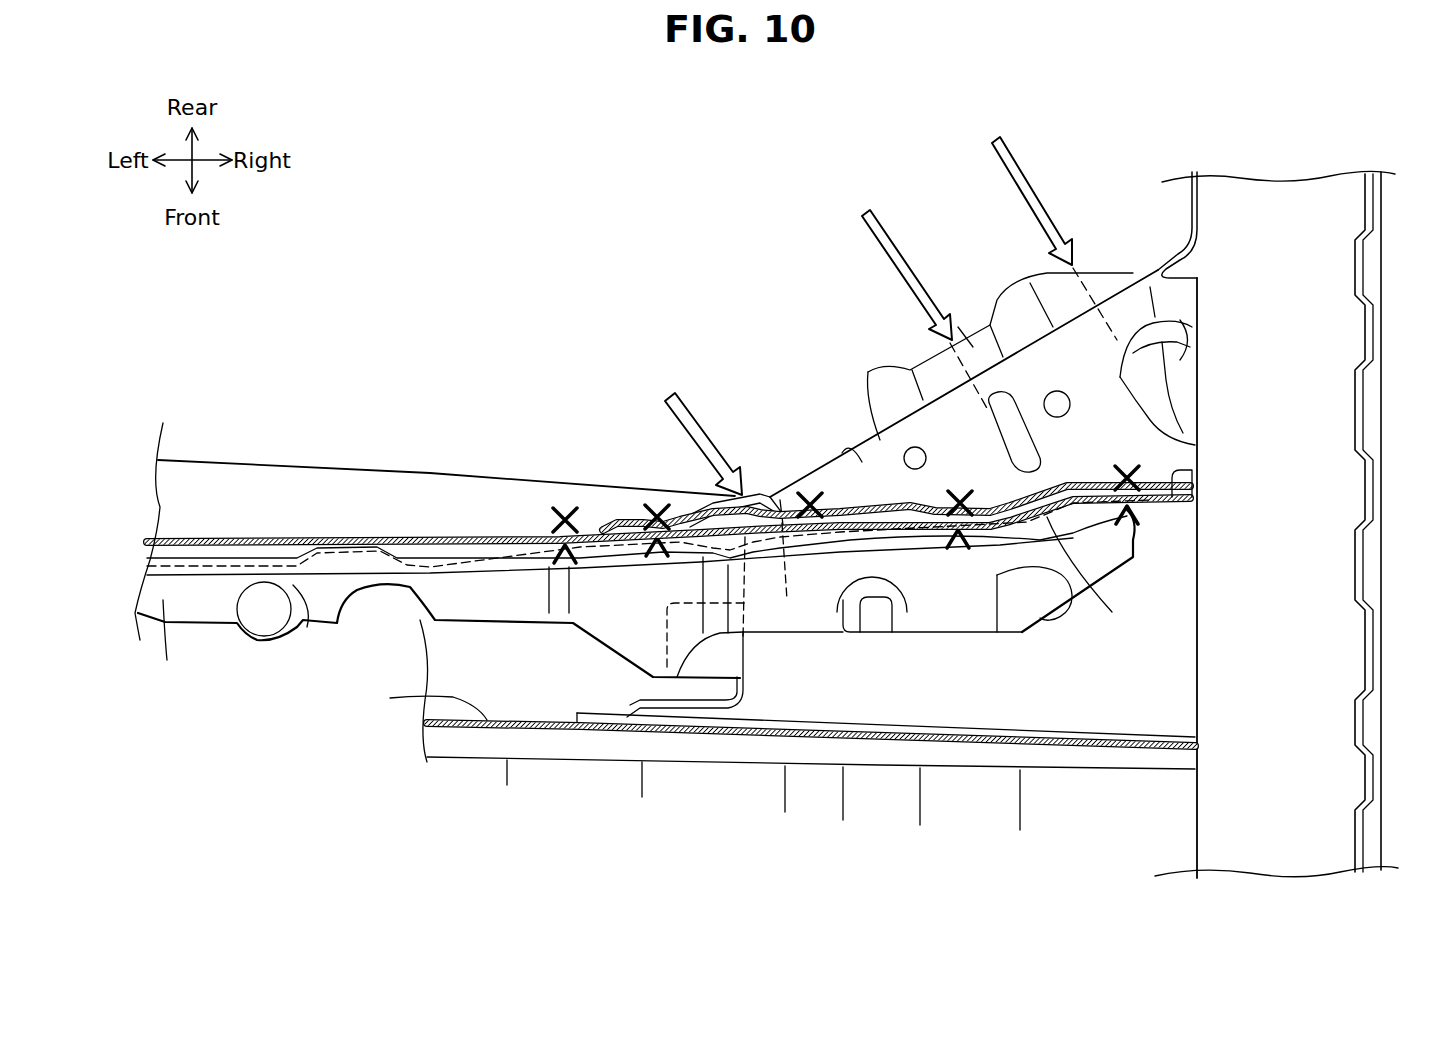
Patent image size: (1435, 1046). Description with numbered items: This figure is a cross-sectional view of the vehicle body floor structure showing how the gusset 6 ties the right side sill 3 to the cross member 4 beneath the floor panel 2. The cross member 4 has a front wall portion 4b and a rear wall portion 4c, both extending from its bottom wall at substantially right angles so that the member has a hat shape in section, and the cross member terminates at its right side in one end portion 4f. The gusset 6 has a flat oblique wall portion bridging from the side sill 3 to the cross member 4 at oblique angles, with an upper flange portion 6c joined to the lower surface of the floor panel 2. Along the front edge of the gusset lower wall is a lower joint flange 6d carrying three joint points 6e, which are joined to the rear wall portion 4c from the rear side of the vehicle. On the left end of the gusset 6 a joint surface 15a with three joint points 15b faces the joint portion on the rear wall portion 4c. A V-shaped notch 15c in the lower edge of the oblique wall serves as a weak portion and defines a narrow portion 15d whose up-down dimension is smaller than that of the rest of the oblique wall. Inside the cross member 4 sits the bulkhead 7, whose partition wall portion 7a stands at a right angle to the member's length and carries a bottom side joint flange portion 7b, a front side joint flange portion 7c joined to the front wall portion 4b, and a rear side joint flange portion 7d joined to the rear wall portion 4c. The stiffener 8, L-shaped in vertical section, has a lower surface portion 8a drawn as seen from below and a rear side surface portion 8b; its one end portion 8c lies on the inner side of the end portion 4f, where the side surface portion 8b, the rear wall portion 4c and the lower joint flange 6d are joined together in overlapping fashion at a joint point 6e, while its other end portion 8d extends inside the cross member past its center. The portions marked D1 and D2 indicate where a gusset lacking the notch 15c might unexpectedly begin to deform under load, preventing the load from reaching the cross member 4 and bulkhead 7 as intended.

The floor panel 2 is at (712, 271).
The side sill 3 is at (1343, 492).
The cross member 4 is at (345, 705).
The front wall portion 4b is at (771, 755).
The rear wall portion 4c is at (377, 612).
The one end portion of the cross member 4f is at (1198, 463).
The gusset 6 is at (1100, 258).
The upper flange portion 6c is at (958, 327).
The lower joint flange 6d is at (855, 458).
The joint point 6e is at (875, 370).
The bulkhead 7 is at (850, 865).
The partition wall portion 7a is at (747, 657).
The bottom side joint flange portion 7b is at (700, 560).
The front side joint flange portion 7c is at (580, 757).
The rear side joint flange portion 7d is at (787, 600).
The stiffener 8 is at (945, 642).
The lower surface portion 8a is at (1040, 618).
The rear side surface portion 8b is at (1087, 578).
The one end portion of the stiffener 8c is at (1135, 575).
The other end portion of the stiffener 8d is at (167, 660).
The joint surface 15a is at (600, 525).
The joint point 15b is at (565, 512).
The notch 15c is at (782, 500).
The narrow portion 15d is at (755, 488).
The portion indicated by D1 is at (895, 256).
The portion indicated by D2 is at (1020, 182).